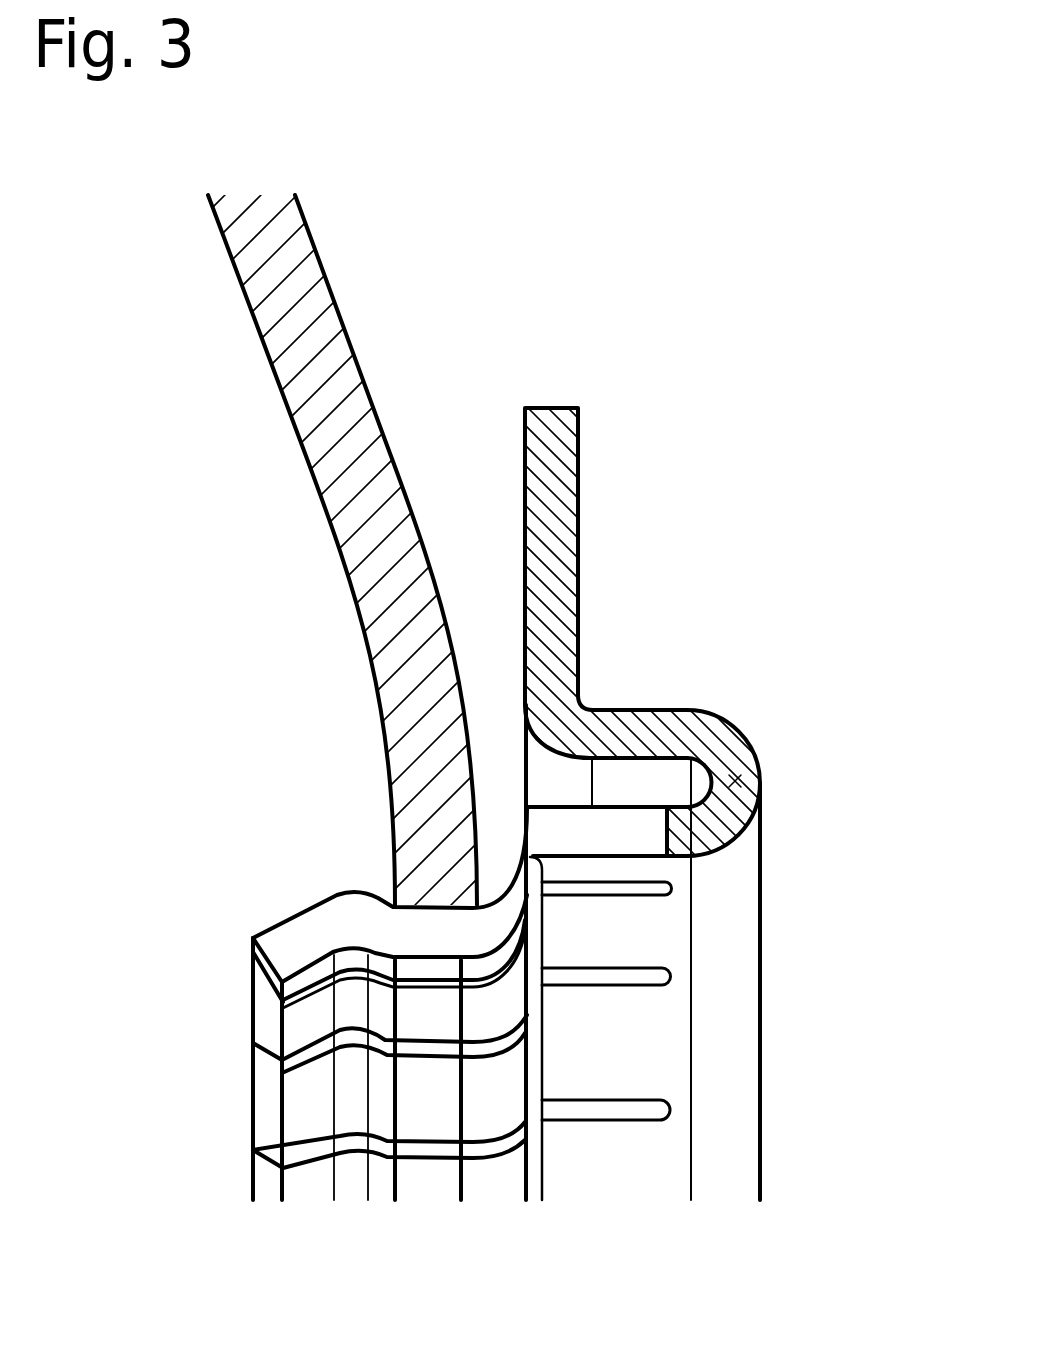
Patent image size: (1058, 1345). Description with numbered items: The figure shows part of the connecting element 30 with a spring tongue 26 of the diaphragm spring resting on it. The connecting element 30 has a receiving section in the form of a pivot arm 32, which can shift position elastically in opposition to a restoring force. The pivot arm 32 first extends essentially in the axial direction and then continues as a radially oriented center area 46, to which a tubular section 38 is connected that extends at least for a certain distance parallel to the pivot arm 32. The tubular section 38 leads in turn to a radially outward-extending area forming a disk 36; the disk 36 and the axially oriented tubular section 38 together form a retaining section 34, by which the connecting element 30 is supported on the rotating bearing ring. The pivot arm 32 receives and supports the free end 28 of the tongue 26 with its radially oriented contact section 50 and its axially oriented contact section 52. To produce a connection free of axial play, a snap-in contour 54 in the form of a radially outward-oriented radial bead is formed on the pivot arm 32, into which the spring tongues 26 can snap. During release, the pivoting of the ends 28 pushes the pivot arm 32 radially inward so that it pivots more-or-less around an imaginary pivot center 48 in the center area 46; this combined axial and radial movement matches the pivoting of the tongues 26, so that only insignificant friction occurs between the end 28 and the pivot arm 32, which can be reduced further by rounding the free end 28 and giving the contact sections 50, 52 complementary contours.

The spring tongue 26 is at (293, 258).
The free end of spring tongue 28 is at (393, 898).
The connecting element 30 is at (622, 620).
The pivot arm 32 is at (453, 952).
The retaining section 34 is at (622, 632).
The disk 36 is at (548, 496).
The tubular section 38 is at (643, 737).
The center area 46 is at (752, 742).
The pivot center 48 is at (735, 781).
The radial contact section 50 is at (530, 885).
The axial contact section 52 is at (432, 932).
The snap-in contour 54 is at (253, 958).